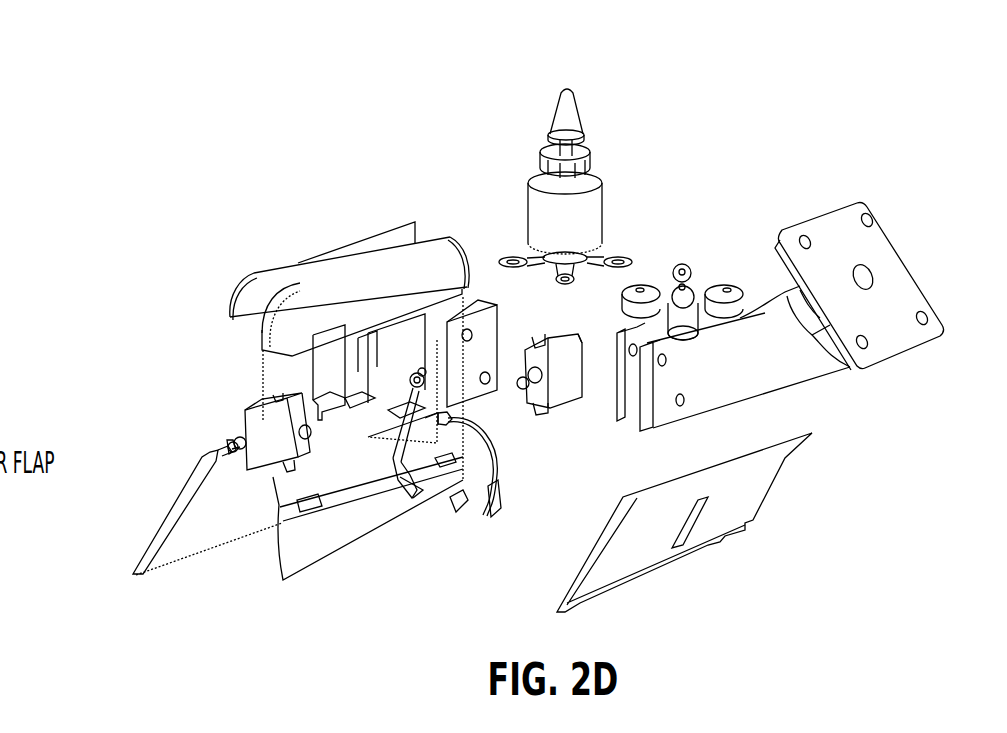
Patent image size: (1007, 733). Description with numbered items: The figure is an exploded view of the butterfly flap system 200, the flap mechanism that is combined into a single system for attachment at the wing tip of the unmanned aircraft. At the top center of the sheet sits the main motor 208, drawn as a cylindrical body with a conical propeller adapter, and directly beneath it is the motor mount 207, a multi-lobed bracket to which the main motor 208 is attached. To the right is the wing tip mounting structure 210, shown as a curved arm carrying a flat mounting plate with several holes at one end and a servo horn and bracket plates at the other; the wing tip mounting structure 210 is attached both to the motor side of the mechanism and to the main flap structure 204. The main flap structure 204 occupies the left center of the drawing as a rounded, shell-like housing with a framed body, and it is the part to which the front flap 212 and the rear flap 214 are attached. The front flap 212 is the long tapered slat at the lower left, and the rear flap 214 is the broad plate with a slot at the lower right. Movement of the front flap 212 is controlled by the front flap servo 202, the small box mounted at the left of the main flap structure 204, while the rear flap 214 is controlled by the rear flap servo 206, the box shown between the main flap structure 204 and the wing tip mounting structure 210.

The butterfly flap system 200 is at (318, 168).
The front flap servo 202 is at (257, 407).
The main flap structure 204 is at (322, 288).
The rear flap servo 206 is at (528, 407).
The motor mount 207 is at (540, 253).
The main motor 208 is at (597, 213).
The wing tip mounting structure 210 is at (867, 205).
The front flap 212 is at (156, 556).
The rear flap 214 is at (752, 496).